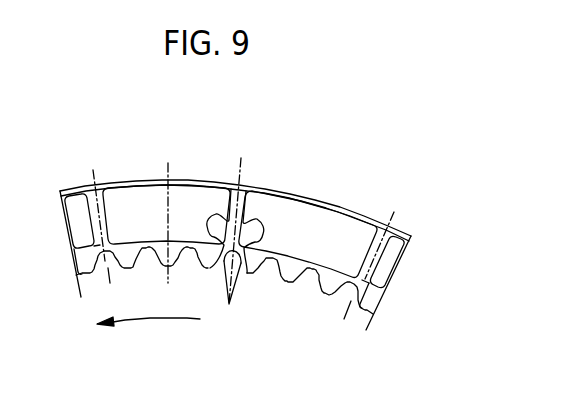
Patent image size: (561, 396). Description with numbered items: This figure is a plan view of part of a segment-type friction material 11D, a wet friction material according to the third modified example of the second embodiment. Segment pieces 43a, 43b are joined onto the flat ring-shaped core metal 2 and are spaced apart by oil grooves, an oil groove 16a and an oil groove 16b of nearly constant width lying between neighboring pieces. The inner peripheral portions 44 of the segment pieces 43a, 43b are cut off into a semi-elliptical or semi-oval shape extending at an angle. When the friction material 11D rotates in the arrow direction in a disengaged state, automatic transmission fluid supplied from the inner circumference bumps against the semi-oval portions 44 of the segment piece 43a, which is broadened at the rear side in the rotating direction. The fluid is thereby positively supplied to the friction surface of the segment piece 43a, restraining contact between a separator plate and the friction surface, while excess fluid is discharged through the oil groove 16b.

The segment-type friction material 11D is at (279, 177).
The core metal 2 is at (351, 209).
The oil groove 16a is at (236, 192).
The oil groove 16b is at (97, 192).
The segment piece 43a is at (313, 212).
The segment piece 43b is at (128, 193).
The inner peripheral portion 44 is at (171, 321).